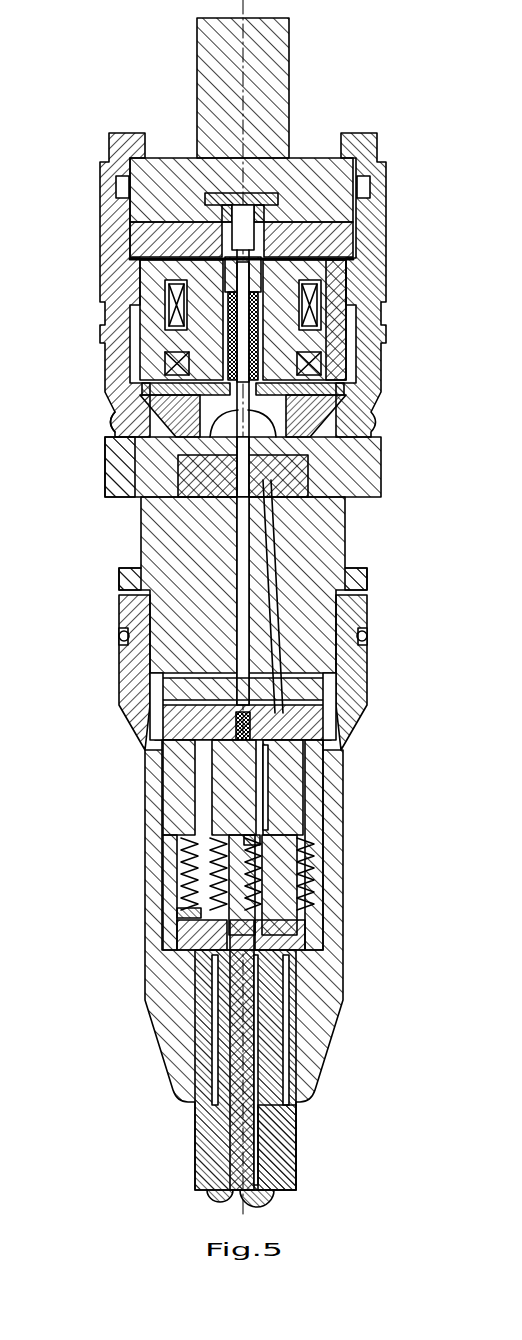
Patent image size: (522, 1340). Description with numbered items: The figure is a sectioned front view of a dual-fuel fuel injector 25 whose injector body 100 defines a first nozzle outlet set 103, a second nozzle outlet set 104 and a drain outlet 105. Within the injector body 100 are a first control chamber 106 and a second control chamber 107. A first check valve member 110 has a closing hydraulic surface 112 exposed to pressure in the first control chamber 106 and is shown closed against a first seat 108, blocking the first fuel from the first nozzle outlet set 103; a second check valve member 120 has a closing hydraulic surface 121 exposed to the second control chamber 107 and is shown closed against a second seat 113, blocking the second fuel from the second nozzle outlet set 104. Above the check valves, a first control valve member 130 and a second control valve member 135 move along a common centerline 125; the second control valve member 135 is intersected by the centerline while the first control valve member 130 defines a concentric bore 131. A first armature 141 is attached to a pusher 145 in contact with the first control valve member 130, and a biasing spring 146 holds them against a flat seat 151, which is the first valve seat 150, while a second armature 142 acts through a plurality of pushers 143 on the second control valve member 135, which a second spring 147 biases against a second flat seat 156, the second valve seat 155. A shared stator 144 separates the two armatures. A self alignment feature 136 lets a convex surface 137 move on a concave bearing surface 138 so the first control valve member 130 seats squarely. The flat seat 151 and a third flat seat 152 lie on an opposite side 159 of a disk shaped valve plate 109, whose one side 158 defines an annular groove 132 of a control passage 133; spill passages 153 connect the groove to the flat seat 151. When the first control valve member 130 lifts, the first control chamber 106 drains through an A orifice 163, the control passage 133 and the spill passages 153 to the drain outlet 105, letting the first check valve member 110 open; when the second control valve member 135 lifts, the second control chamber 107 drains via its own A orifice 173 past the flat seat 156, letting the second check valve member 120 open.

The fuel injector 25 is at (73, 146).
The injector body 100 is at (104, 332).
The first nozzle outlet set 103 is at (270, 1198).
The second nozzle outlet set 104 is at (215, 1198).
The drain outlet 105 is at (372, 452).
The first control chamber 106 is at (290, 766).
The second control chamber 107 is at (200, 762).
The first seat 108 is at (255, 1178).
The valve plate 109 is at (150, 484).
The first check valve member 110 is at (285, 805).
The closing hydraulic surface 112 is at (296, 748).
The second seat 113 is at (222, 1178).
The second check valve member 120 is at (200, 802).
The closing hydraulic surface 121 is at (205, 748).
The common centerline 125 is at (240, 70).
The first control valve member 130 is at (268, 382).
The bore 131 is at (206, 380).
The annular groove 132 is at (165, 494).
The control passage 133 is at (340, 578).
The second control valve member 135 is at (237, 706).
The self alignment feature 136 is at (140, 378).
The convex surface 137 is at (330, 395).
The concave bearing surface 138 is at (150, 402).
The first armature 141 is at (333, 350).
The second armature 142 is at (150, 262).
The pushers 143 is at (258, 249).
The shared stator 144 is at (296, 300).
The pusher 145 is at (320, 352).
The biasing spring 146 is at (160, 300).
The second spring 147 is at (295, 708).
The first valve seat 150 is at (318, 402).
The flat seat 151 is at (330, 437).
The third flat seat 152 is at (118, 432).
The spill passages 153 is at (150, 462).
The second valve seat 155 is at (237, 708).
The second flat seat 156 is at (325, 703).
The one side 158 is at (320, 510).
The opposite side 159 is at (376, 450).
The A orifice 163 is at (318, 722).
The A orifice 173 is at (200, 740).